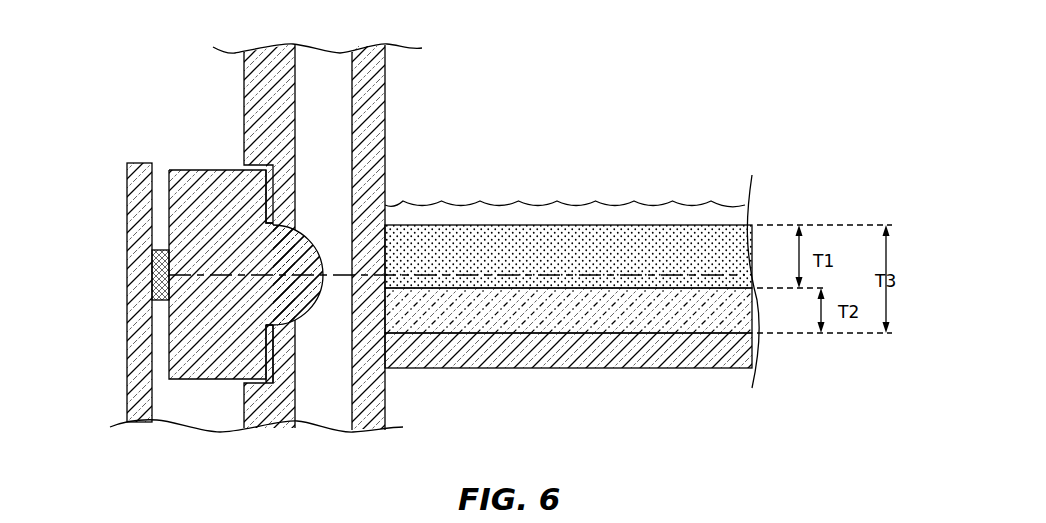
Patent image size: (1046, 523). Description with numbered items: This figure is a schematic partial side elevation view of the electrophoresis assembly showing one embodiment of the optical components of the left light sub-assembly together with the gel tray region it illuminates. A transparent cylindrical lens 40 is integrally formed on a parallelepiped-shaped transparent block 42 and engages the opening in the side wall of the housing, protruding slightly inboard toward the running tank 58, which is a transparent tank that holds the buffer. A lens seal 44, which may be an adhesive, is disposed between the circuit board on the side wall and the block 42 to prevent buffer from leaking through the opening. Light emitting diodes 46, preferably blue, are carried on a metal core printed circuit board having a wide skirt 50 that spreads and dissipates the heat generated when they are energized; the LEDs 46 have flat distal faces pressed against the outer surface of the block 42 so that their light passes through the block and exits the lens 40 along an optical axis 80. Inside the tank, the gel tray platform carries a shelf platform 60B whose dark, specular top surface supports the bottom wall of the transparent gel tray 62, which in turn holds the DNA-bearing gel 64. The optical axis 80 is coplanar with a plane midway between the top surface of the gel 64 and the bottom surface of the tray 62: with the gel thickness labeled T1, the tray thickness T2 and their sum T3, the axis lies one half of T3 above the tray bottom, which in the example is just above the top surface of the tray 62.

The transparent cylindrical lens 40 is at (311, 302).
The transparent block 42 is at (200, 168).
The lens seal 44 is at (266, 351).
The light emitting diodes 46 is at (160, 270).
The wide skirt 50 is at (128, 327).
The running tank 58 is at (386, 128).
The shelf platform 60B is at (597, 360).
The gel tray 62 is at (499, 313).
The gel 64 is at (567, 240).
The optical axis 80 is at (215, 275).